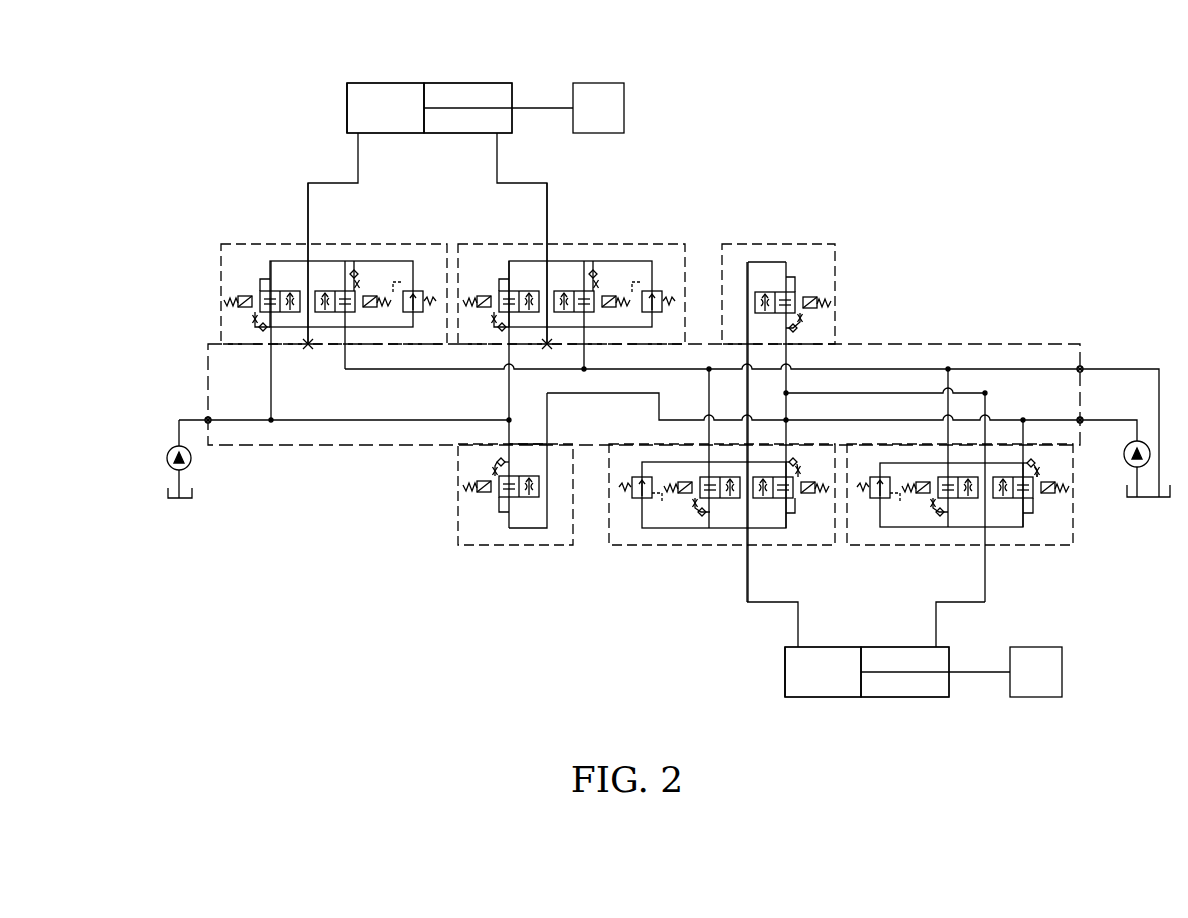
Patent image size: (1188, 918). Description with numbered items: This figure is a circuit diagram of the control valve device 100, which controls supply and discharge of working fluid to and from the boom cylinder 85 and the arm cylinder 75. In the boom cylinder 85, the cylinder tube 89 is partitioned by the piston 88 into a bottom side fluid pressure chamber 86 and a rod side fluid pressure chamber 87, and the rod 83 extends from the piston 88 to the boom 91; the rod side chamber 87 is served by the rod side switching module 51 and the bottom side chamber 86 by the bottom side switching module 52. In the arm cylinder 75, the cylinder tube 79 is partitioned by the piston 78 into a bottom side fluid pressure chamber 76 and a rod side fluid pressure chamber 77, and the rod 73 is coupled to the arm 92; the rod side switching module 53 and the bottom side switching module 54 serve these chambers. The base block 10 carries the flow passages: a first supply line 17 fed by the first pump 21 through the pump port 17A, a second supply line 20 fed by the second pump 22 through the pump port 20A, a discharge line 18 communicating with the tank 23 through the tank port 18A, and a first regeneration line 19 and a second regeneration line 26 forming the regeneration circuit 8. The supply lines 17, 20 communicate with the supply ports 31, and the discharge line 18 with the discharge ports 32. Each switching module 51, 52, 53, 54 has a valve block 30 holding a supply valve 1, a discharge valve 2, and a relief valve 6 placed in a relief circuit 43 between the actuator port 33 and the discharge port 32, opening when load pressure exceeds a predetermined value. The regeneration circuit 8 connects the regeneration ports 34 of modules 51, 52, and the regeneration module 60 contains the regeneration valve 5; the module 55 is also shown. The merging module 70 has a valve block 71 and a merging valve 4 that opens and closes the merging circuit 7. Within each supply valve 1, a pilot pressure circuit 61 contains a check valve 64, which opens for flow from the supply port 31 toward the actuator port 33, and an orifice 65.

The supply valve 1 is at (258, 293).
The discharge valve 2 is at (331, 291).
The merging valve 4 is at (527, 498).
The regeneration valve 5 is at (771, 292).
The relief valve 6 is at (418, 291).
The merging circuit 7 is at (548, 503).
The regeneration circuit 8 is at (748, 262).
The base block 10 is at (1082, 344).
The first supply line 17 is at (1058, 418).
The pump port 17A is at (1083, 418).
The discharge line 18 is at (1000, 371).
The tank port 18A is at (1083, 368).
The first regeneration line 19 is at (912, 393).
The second supply line 20 is at (352, 418).
The pump port 20A is at (205, 418).
The first pump 21 is at (1140, 440).
The second pump 22 is at (191, 462).
The tank 23 is at (190, 500).
The second regeneration line 26 is at (710, 392).
The valve block 30 is at (370, 244).
The supply port 31 is at (268, 336).
The discharge port 32 is at (345, 339).
The actuator port 33 is at (308, 275).
The regeneration port 34 is at (308, 333).
The relief circuit 43 is at (398, 261).
The rod side switching module 51 is at (847, 532).
The bottom side switching module 52 is at (608, 532).
The rod side switching module 53 is at (688, 255).
The bottom side switching module 54 is at (218, 250).
The control valve unit 55 is at (810, 244).
The regeneration module 60 is at (838, 250).
The pilot pressure circuit 61 is at (1040, 470).
The check valve 64 is at (1036, 463).
The orifice 65 is at (1042, 476).
The merging module 70 is at (456, 532).
The valve block 71 is at (498, 545).
The rod 73 is at (543, 105).
The arm cylinder 75 is at (344, 93).
The bottom side fluid pressure chamber 76 is at (380, 100).
The rod side fluid pressure chamber 77 is at (476, 96).
The piston 78 is at (426, 96).
The cylinder tube 79 is at (350, 83).
The rod 83 is at (980, 675).
The boom cylinder 85 is at (782, 684).
The bottom side fluid pressure chamber 86 is at (816, 689).
The rod side fluid pressure chamber 87 is at (908, 690).
The piston 88 is at (863, 689).
The cylinder tube 89 is at (790, 698).
The boom 91 is at (1064, 674).
The arm 92 is at (626, 94).
The control valve device 100 is at (1012, 180).